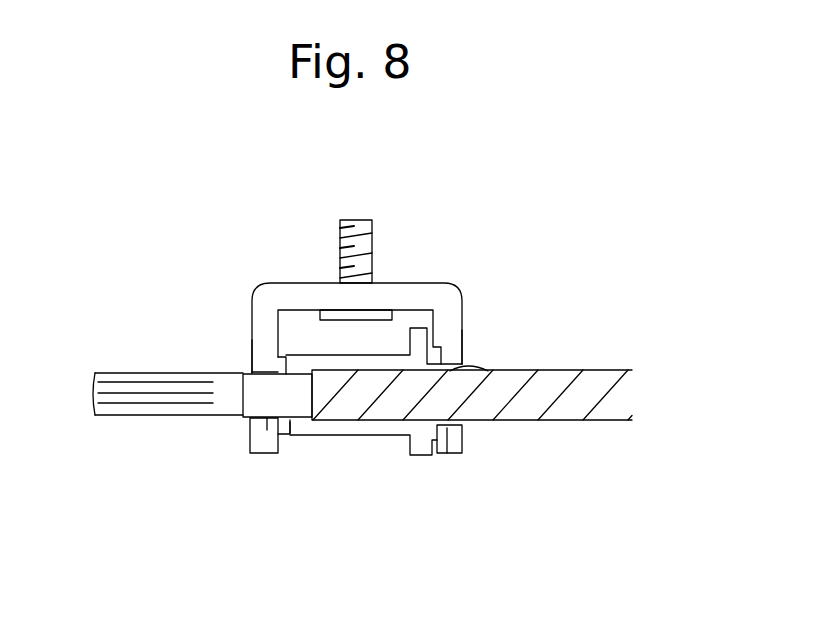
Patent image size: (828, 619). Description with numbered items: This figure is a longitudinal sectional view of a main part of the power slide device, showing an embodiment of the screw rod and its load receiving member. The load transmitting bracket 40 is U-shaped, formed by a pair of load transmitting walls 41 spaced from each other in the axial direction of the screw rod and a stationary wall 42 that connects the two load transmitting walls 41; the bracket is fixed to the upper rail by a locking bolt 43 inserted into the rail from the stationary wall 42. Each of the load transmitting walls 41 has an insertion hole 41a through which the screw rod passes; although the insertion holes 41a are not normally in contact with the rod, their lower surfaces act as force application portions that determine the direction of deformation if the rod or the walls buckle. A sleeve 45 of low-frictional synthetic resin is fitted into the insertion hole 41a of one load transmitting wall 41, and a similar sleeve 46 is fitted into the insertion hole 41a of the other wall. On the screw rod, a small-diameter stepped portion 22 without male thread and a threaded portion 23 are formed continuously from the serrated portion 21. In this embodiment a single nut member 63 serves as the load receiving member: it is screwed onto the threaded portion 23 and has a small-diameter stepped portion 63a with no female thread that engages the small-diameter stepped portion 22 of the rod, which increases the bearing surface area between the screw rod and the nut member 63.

The serrated portion 21 is at (142, 404).
The small-diameter stepped portion 22 is at (268, 392).
The threaded portion 23 is at (590, 421).
The load transmitting bracket 40 is at (474, 287).
The load transmitting walls 41 is at (262, 336).
The insertion holes 41a is at (266, 419).
The stationary wall 42 is at (393, 292).
The locking bolt 43 is at (357, 223).
The sleeve 45 is at (290, 426).
The sleeve 46 is at (440, 432).
The nut member 63 is at (386, 428).
The small-diameter stepped portion 63a is at (302, 428).